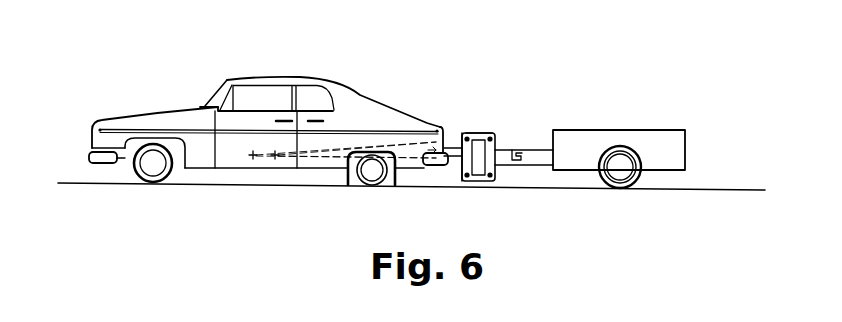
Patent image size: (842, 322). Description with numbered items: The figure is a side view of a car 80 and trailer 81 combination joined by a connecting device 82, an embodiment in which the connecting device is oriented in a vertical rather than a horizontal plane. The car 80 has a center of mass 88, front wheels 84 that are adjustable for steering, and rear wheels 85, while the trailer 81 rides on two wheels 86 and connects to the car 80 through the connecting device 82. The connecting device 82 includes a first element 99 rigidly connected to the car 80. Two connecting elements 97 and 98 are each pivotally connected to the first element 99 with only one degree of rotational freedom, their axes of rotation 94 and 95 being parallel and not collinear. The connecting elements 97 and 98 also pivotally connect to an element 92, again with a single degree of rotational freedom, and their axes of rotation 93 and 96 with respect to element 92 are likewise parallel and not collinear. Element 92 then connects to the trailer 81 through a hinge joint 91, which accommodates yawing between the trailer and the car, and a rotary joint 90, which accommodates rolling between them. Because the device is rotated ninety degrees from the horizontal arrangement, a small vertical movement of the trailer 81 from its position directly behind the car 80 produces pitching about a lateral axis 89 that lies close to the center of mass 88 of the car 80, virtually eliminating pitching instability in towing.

The car 80 is at (152, 113).
The trailer 81 is at (673, 147).
The connecting device 82 is at (559, 58).
The front wheels 84 is at (140, 182).
The rear wheels 85 is at (370, 183).
The wheels 86 is at (627, 186).
The center of mass 88 is at (253, 158).
The lateral axis 89 is at (276, 158).
The rotary joint 90 is at (536, 131).
The hinge joint 91 is at (517, 166).
The element 92 is at (495, 146).
The axis of rotation 93 is at (492, 177).
The axis of rotation 94 is at (467, 177).
The axis of rotation 95 is at (467, 136).
The axis of rotation 96 is at (491, 135).
The connecting element 97 is at (478, 178).
The connecting element 98 is at (478, 132).
The first element 99 is at (462, 159).